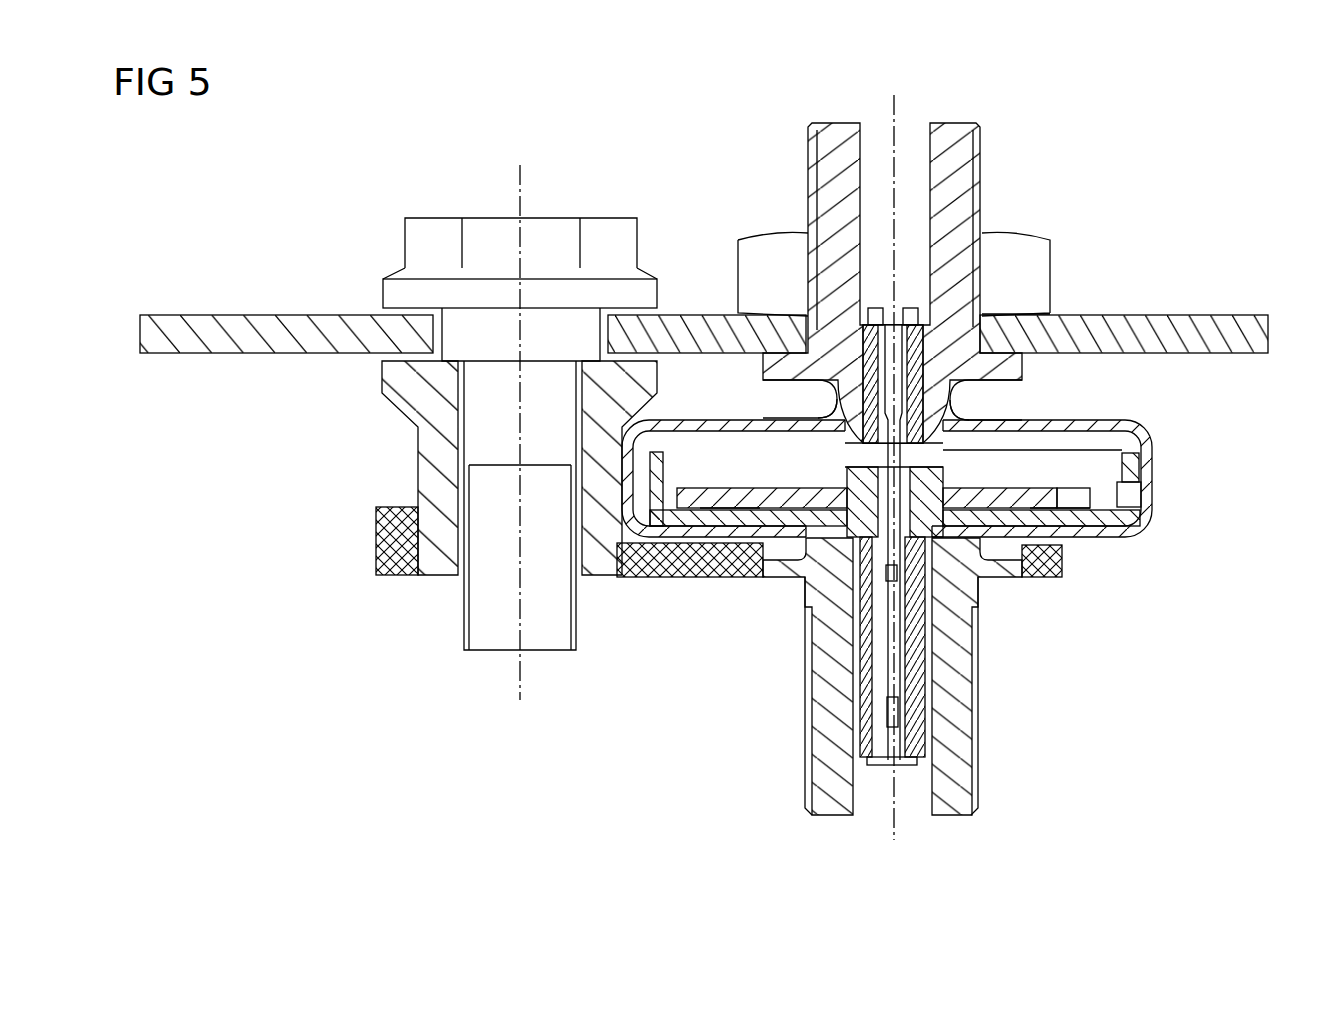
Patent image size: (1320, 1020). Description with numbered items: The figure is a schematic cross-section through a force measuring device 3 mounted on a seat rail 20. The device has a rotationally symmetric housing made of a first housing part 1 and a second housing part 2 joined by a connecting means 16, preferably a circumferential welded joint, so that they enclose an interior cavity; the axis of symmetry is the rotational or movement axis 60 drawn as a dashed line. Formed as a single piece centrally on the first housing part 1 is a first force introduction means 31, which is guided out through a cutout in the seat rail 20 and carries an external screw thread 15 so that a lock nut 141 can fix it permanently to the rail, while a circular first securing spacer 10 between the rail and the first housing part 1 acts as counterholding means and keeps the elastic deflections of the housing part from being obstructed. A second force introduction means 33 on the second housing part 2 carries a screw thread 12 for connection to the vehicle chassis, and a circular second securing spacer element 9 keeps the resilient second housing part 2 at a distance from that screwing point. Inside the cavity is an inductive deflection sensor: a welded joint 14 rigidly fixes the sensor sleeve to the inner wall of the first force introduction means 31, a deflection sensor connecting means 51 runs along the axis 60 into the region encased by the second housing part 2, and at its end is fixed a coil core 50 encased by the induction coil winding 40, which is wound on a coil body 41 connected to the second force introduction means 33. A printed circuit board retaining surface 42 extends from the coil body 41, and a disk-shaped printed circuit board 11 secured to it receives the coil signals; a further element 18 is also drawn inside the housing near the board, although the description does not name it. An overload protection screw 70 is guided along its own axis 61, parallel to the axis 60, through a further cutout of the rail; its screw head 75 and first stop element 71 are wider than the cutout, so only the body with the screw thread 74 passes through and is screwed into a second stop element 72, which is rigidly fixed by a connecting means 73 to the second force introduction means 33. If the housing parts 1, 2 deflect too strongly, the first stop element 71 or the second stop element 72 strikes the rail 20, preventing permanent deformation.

The first housing part 1 is at (1085, 425).
The second housing part 2 is at (1095, 538).
The force measuring device 3 is at (1243, 628).
The second securing spacer element 9 is at (722, 578).
The first securing spacer 10 is at (768, 372).
The printed circuit board 11 is at (713, 502).
The screw thread 12 is at (805, 722).
The welded joint 14 is at (1010, 318).
The screw thread 15 is at (808, 162).
The connecting means 16 is at (1145, 462).
The spacer 18 is at (1142, 497).
The seat rail 20 is at (180, 313).
The first force introduction means 31 is at (1070, 145).
The second force introduction means 33 is at (1080, 682).
The winding of the induction coil 40 is at (800, 440).
The coil body 41 is at (823, 548).
The printed circuit board retaining surface 42 is at (818, 440).
The core of the induction coil 50 is at (928, 622).
The deflection sensor connecting means 51 is at (872, 338).
The rotational axis 60 is at (898, 103).
The rotational axis of the overload protection screw 61 is at (524, 188).
The overload protection screw 70 is at (438, 178).
The first stop element 71 is at (383, 292).
The second stop element 72 is at (382, 378).
The connecting means 73 is at (376, 543).
The screw thread 74 is at (464, 617).
The screw head 75 is at (405, 226).
The lock nut 141 is at (748, 262).